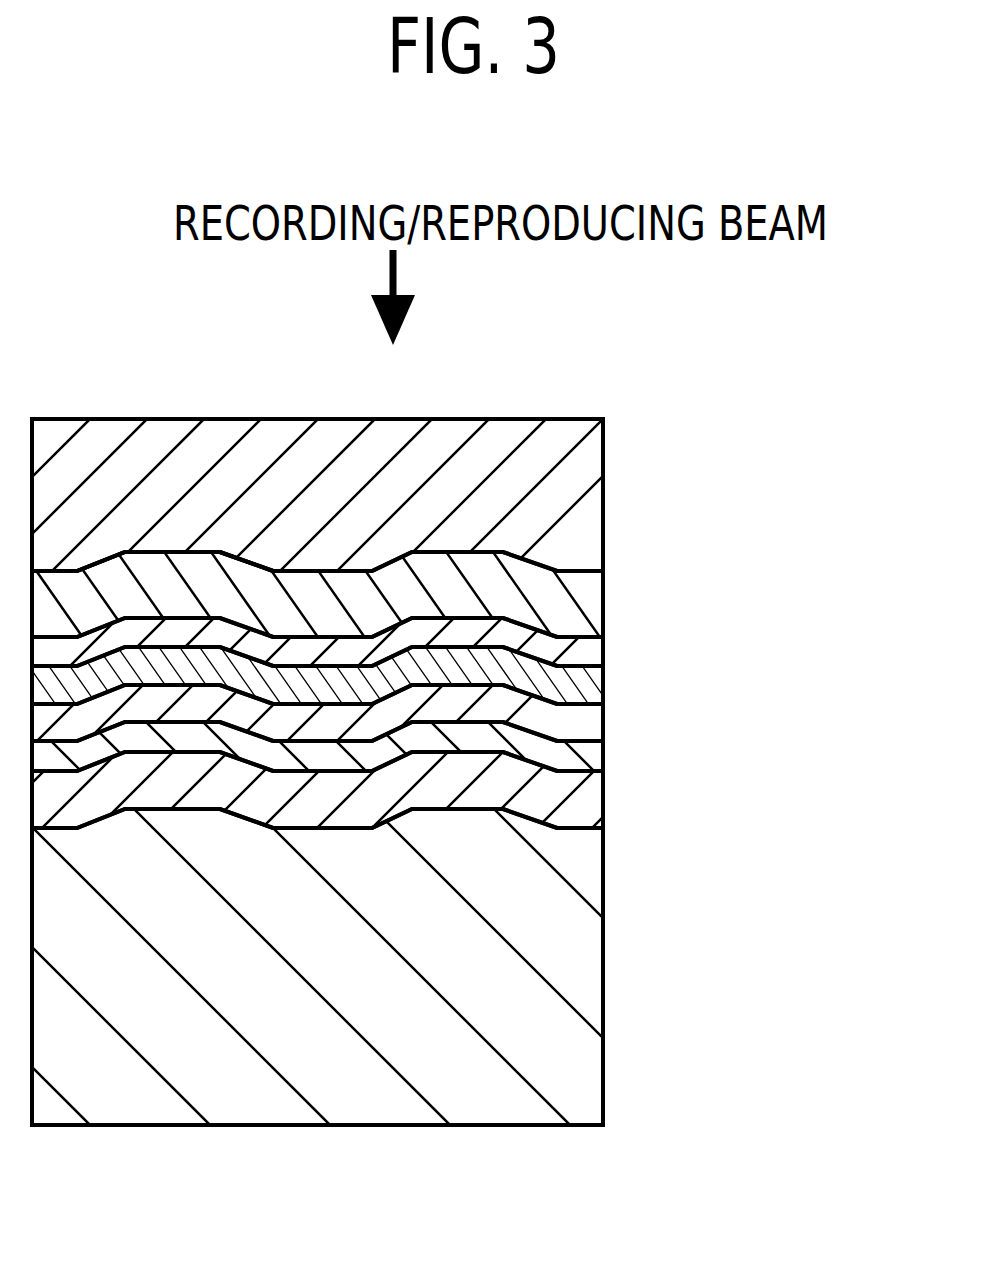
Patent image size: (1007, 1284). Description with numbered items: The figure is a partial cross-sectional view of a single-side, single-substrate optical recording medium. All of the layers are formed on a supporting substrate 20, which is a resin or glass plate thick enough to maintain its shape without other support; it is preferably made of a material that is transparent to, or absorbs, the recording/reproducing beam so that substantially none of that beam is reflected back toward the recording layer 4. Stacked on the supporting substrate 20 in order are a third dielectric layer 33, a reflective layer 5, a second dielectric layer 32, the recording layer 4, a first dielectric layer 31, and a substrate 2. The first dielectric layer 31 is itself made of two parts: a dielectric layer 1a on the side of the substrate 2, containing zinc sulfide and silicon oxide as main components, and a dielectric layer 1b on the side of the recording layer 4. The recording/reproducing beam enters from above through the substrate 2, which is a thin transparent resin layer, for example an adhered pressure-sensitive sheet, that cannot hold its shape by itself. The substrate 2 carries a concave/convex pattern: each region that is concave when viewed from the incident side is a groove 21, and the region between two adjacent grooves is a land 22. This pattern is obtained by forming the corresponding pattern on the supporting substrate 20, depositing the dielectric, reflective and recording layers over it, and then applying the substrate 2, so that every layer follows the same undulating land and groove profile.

The substrate 2 is at (593, 478).
The groove 21 is at (193, 547).
The land 22 is at (318, 567).
The dielectric layer 1a is at (595, 593).
The dielectric layer 1b is at (595, 648).
The first dielectric layer 31 is at (471, 772).
The recording layer 4 is at (595, 687).
The second dielectric layer 32 is at (595, 715).
The reflective layer 5 is at (595, 753).
The third dielectric layer 33 is at (595, 795).
The supporting substrate 20 is at (593, 948).